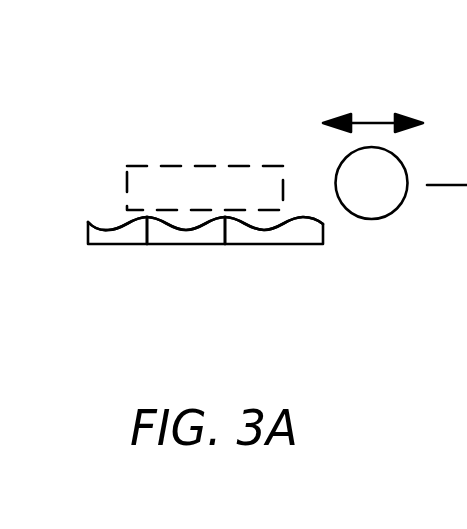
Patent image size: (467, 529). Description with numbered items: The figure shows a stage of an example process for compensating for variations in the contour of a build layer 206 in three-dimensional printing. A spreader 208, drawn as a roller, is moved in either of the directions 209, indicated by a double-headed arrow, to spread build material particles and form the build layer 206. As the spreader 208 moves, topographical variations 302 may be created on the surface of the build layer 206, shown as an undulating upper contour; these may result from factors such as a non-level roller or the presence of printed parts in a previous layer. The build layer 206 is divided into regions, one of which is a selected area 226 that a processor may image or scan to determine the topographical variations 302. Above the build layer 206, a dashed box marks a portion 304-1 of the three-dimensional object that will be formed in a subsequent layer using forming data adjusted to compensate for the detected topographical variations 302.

The build layer 206 is at (117, 245).
The selected area 226 is at (187, 245).
The topographical variations 302 is at (104, 208).
The portion of the 3D object 304-1 is at (212, 165).
The spreader 208 is at (380, 218).
The directions 209 is at (376, 122).